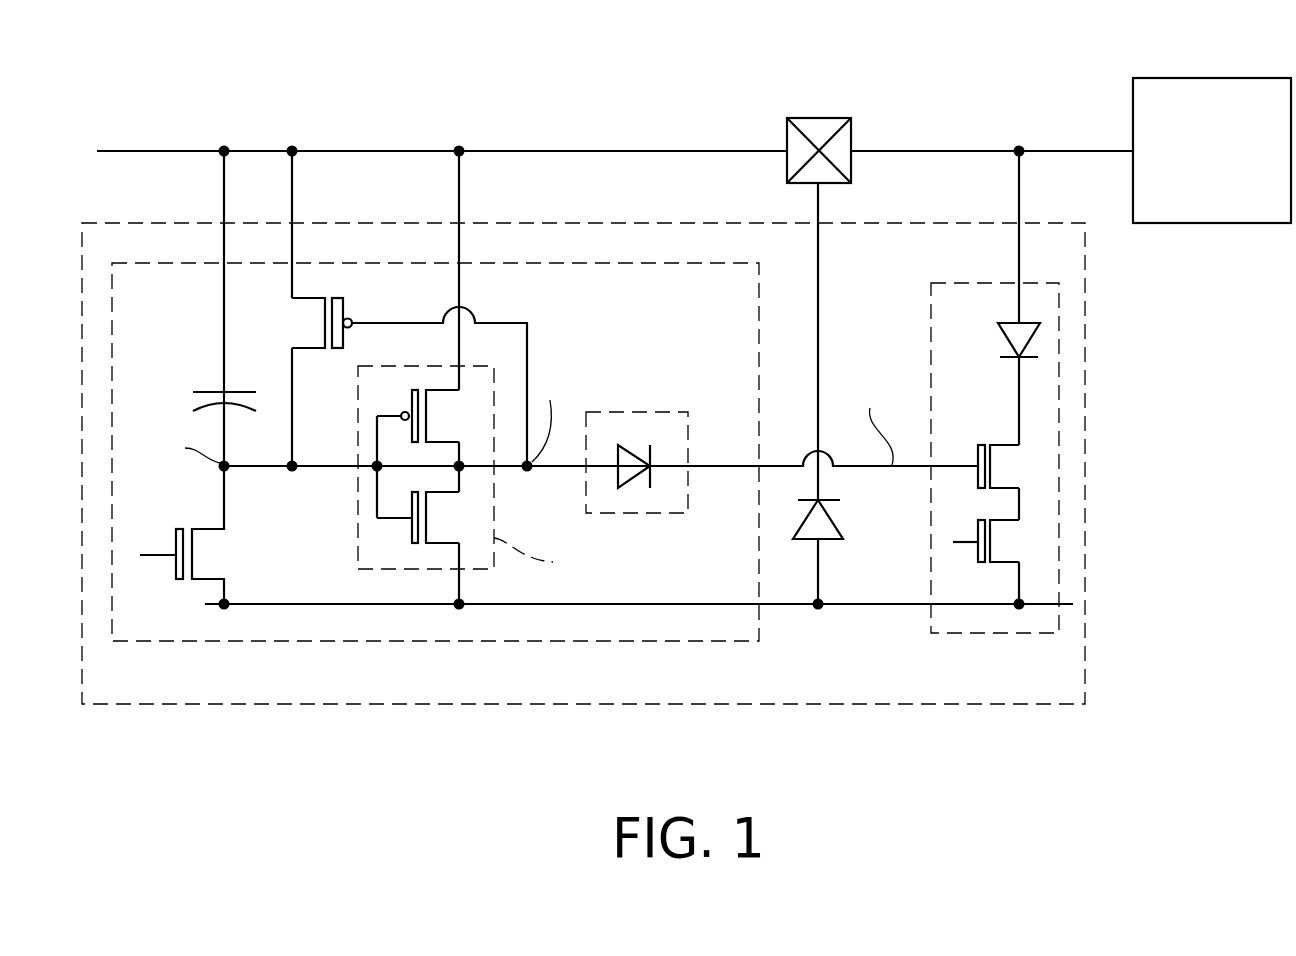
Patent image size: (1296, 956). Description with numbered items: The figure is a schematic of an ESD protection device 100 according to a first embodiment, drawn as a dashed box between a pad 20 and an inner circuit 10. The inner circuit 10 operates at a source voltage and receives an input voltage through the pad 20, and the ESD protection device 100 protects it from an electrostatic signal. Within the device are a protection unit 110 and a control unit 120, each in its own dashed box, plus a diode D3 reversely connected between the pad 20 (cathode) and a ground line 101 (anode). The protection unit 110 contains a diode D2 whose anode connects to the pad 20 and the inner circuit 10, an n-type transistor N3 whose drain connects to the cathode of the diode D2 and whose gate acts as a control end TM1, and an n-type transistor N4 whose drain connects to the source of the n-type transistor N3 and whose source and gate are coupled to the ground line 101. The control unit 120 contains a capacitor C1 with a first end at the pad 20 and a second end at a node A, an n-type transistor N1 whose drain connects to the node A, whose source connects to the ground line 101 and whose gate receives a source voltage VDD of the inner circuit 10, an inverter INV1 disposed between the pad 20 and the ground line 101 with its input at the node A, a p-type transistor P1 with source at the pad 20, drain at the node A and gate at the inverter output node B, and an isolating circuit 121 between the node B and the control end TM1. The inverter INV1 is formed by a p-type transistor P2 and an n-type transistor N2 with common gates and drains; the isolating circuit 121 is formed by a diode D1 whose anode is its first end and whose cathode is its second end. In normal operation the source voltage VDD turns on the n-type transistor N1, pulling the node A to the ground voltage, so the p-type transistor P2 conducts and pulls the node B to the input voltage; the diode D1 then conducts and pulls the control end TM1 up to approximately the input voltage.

The inner circuit 10 is at (1213, 223).
The pad 20 is at (818, 118).
The ESD protection device 100 is at (1085, 526).
The ground line 101 is at (793, 604).
The protection unit 110 is at (962, 633).
The control unit 120 is at (673, 641).
The isolating circuit 121 is at (637, 416).
The capacitor C1 is at (205, 397).
The p-type transistor P1 is at (396, 382).
The p-type transistor P2 is at (447, 416).
The n-type transistor N1 is at (191, 535).
The n-type transistor N2 is at (447, 517).
The n-type transistor N3 is at (1013, 482).
The n-type transistor N4 is at (999, 559).
The diode D1 is at (640, 408).
The diode D2 is at (998, 384).
The diode D3 is at (841, 552).
The inverter INV1 is at (484, 475).
The control end TM1 is at (869, 411).
The node A is at (192, 454).
The node B is at (546, 408).
The source voltage VDD is at (147, 532).